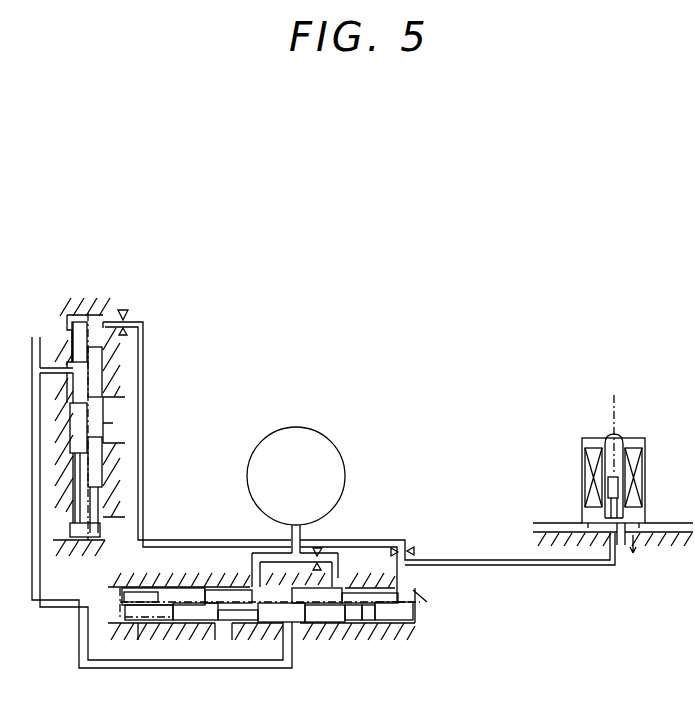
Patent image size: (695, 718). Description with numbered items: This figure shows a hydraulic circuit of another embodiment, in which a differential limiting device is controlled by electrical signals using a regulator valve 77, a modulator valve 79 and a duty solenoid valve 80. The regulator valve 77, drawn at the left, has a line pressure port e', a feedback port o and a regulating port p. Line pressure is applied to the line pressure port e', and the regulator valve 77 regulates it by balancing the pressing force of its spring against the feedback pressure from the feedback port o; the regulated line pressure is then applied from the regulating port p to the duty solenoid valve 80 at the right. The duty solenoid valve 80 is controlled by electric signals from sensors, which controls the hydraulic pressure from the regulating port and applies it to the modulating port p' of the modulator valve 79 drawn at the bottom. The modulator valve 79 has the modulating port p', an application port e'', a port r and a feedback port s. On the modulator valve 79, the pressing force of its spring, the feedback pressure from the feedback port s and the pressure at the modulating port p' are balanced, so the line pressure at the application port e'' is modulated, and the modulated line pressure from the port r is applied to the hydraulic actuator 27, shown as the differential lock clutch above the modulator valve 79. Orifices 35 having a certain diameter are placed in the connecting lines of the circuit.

The regulator valve 77 is at (97, 416).
The orifice 35 is at (123, 310).
The hydraulic actuator 27 is at (297, 430).
The modulator valve 79 is at (280, 602).
The duty solenoid valve 80 is at (574, 440).
The feedback port o is at (93, 315).
The regulating port p is at (137, 411).
The modulating port p' is at (424, 591).
The port r is at (248, 574).
The feedback port s is at (343, 585).
The line pressure port e' is at (56, 350).
The application port e'' is at (178, 504).